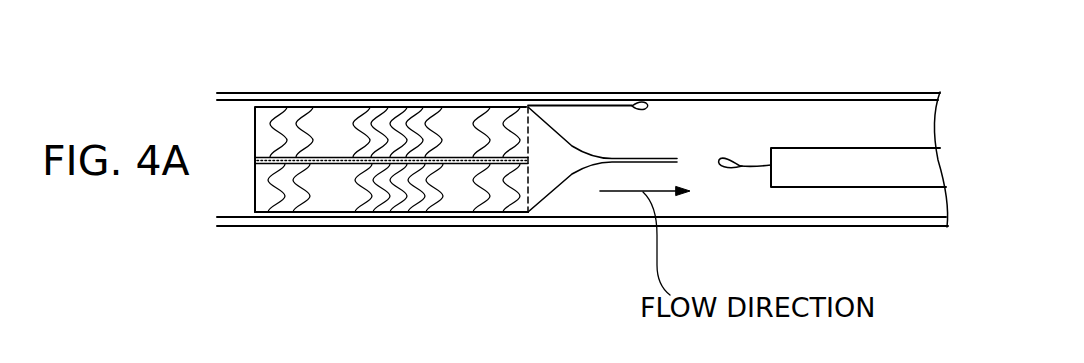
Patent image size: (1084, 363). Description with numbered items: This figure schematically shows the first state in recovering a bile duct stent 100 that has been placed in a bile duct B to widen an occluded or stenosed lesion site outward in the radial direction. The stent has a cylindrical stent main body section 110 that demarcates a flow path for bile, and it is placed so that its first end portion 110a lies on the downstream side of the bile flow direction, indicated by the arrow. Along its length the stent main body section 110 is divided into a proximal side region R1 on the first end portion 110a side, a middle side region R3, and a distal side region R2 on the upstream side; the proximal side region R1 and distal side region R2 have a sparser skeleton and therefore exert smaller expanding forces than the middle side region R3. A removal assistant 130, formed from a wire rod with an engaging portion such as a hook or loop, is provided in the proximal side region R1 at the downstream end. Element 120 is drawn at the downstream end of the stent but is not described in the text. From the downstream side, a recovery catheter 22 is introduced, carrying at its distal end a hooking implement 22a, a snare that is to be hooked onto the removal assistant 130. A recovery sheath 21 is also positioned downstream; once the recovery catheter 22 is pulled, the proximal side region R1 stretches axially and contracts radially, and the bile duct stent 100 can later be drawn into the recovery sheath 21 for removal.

The bile duct stent 100 is at (391, 152).
The stent main body section 110 is at (338, 209).
The first end portion 110a is at (508, 212).
The nozzle / funnel 120 is at (548, 177).
The removal assistant 130 is at (594, 105).
The bile duct B is at (476, 100).
The proximal side region R1 is at (489, 192).
The distal side region R2 is at (292, 192).
The middle side region R3 is at (405, 192).
The recovery sheath 21 is at (822, 150).
The recovery catheter 22 is at (748, 165).
The hooking implement 22a is at (730, 170).